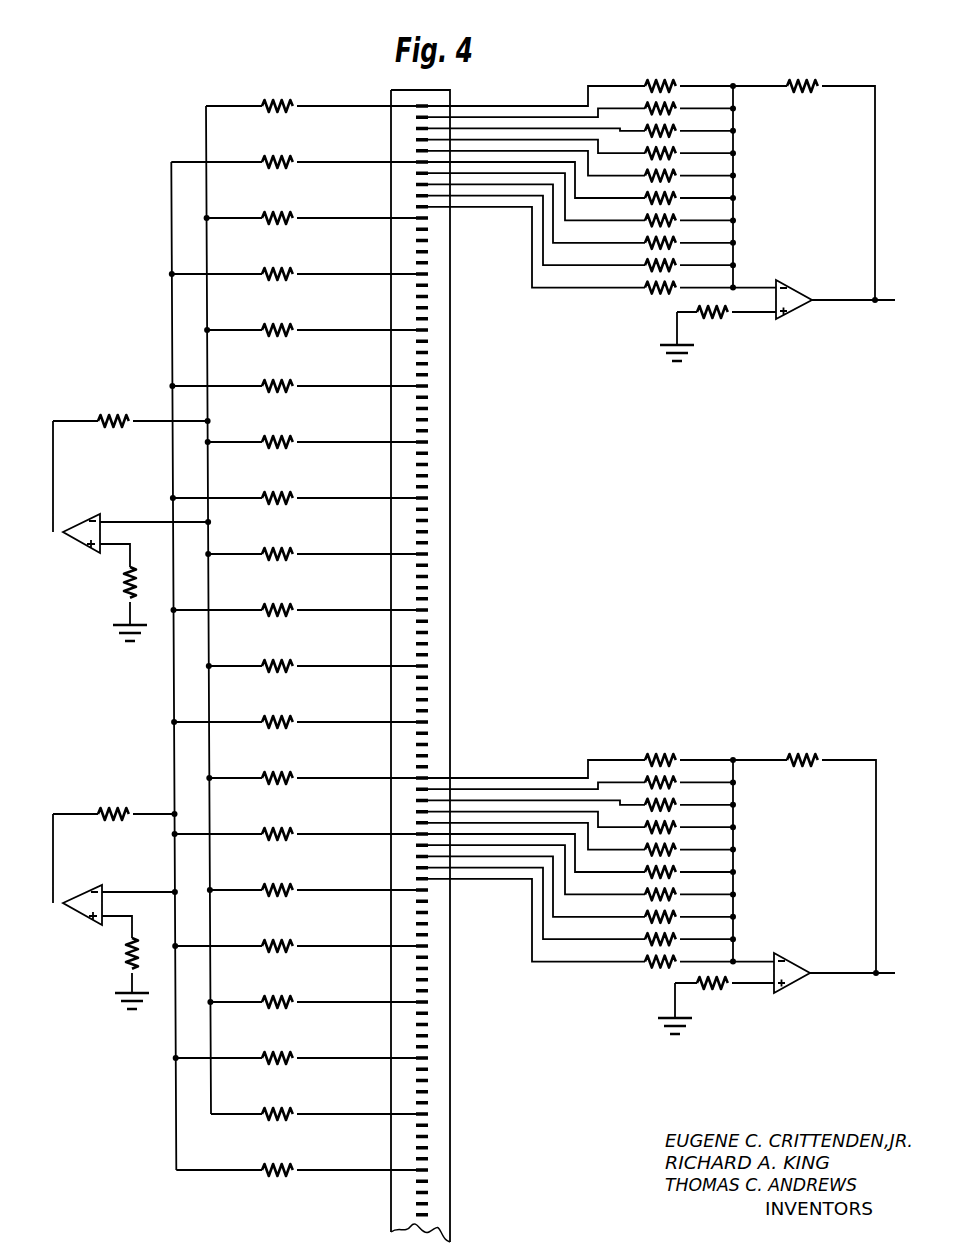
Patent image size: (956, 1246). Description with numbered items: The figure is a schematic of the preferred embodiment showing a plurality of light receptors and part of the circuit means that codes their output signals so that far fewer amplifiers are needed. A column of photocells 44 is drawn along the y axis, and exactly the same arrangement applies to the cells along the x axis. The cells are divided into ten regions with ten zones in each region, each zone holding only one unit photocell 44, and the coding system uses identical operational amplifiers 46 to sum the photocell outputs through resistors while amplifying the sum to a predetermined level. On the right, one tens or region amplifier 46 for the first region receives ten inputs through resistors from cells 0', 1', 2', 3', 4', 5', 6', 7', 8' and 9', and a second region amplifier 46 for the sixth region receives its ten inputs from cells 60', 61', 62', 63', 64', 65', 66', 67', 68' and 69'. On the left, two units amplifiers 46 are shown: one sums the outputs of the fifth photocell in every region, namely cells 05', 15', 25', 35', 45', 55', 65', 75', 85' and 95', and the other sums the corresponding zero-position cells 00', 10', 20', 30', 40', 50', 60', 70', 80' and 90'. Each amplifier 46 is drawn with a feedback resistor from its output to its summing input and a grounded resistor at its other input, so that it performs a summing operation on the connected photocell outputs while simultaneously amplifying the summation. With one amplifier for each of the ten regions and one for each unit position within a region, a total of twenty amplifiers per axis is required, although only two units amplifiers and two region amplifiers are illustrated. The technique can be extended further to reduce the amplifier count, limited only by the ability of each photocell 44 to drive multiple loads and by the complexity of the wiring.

The photocell 44 is at (424, 103).
The operational amplifier 46 is at (796, 305).
The cell 00' is at (317, 98).
The cell 05' is at (299, 154).
The cell 10' is at (317, 210).
The cell 15' is at (300, 266).
The cell 20' is at (317, 322).
The cell 25' is at (300, 378).
The cell 30' is at (318, 434).
The cell 35' is at (300, 490).
The cell 40' is at (318, 546).
The cell 45' is at (301, 602).
The cell 50' is at (318, 658).
The cell 55' is at (301, 714).
The cell 60' is at (471, 762).
The cell 65' is at (454, 845).
The cell 70' is at (319, 882).
The cell 75' is at (301, 938).
The cell 80' is at (319, 994).
The cell 85' is at (302, 1050).
The cell 90' is at (319, 1106).
The cell 95' is at (302, 1162).
The cell 0' is at (580, 86).
The cell 1' is at (580, 102).
The cell 2' is at (580, 124).
The cell 3' is at (580, 146).
The cell 4' is at (580, 166).
The cell 5' is at (580, 183).
The cell 6' is at (580, 199).
The cell 7' is at (580, 216).
The cell 8' is at (580, 234).
The cell 9' is at (602, 250).
The cell 61' is at (580, 775).
The cell 62' is at (580, 798).
The cell 63' is at (580, 820).
The cell 64' is at (580, 839).
The cell 66' is at (580, 872).
The cell 67' is at (580, 889).
The cell 68' is at (580, 907).
The cell 69' is at (601, 923).